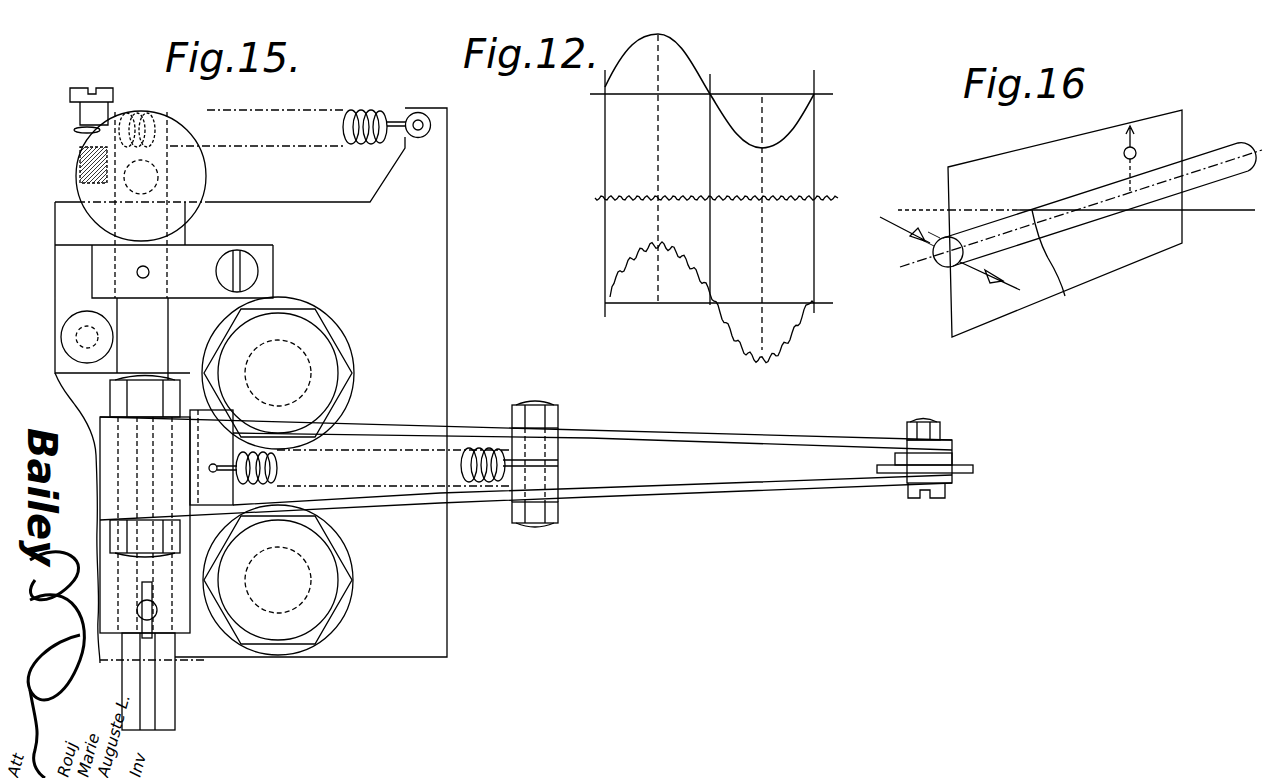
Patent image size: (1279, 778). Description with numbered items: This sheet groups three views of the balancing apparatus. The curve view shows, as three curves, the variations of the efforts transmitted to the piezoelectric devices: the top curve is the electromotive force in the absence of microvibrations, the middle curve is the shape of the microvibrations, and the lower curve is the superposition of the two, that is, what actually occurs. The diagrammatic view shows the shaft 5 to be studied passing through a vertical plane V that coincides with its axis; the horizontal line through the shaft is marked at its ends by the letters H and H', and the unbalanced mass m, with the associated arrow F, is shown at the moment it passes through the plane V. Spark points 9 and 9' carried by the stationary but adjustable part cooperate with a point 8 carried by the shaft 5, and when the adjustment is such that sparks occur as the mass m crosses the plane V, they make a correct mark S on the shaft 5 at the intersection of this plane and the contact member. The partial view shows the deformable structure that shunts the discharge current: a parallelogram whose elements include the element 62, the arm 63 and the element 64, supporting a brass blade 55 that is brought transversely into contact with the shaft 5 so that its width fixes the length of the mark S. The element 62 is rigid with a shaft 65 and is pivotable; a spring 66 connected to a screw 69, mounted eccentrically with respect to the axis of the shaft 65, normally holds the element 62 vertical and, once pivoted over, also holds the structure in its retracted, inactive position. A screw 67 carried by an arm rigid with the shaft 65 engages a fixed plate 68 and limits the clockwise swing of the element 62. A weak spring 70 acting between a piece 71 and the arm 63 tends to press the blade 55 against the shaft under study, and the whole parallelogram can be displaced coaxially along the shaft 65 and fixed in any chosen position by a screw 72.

In FIG. 15, the screw 69 is at (85, 108).
In FIG. 15, the spring 66 is at (355, 112).
In FIG. 15, the fixed plate 68 is at (427, 200).
In FIG. 15, the screw 67 is at (247, 268).
In FIG. 15, the element of parallelogram 62 is at (178, 433).
In FIG. 15, the piece 71 is at (217, 438).
In FIG. 15, the weak spring 70 is at (478, 448).
In FIG. 15, the arm of parallelogram 63 is at (642, 435).
In FIG. 15, the brass blade 55 is at (975, 462).
In FIG. 15, the element of parallelogram 64 is at (940, 465).
In FIG. 15, the screw 72 is at (150, 613).
In FIG. 15, the shaft 65 is at (165, 683).
In FIG. 16, the shaft 5 is at (1230, 165).
In FIG. 16, the point 8 is at (933, 260).
In FIG. 16, the point 9 is at (906, 236).
In FIG. 16, the point 9' is at (990, 284).
In FIG. 16, the unbalanced mass m is at (1135, 149).
In FIG. 16, the force F is at (1115, 143).
In FIG. 16, the vertical plane V is at (1175, 130).
In FIG. 16, the horizontal line H is at (1076, 196).
In FIG. 16, the horizontal line H' is at (1239, 226).
In FIG. 16, the mark S is at (1059, 265).